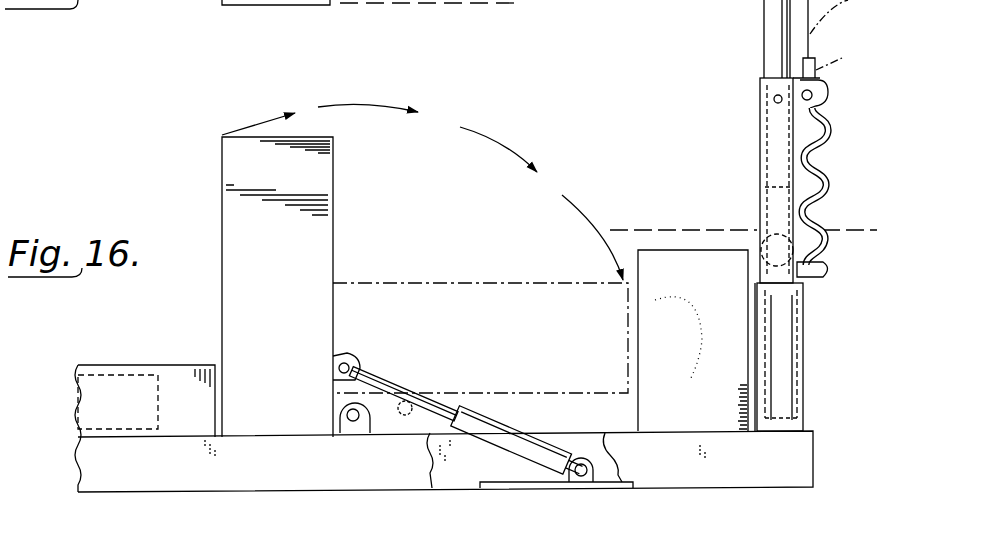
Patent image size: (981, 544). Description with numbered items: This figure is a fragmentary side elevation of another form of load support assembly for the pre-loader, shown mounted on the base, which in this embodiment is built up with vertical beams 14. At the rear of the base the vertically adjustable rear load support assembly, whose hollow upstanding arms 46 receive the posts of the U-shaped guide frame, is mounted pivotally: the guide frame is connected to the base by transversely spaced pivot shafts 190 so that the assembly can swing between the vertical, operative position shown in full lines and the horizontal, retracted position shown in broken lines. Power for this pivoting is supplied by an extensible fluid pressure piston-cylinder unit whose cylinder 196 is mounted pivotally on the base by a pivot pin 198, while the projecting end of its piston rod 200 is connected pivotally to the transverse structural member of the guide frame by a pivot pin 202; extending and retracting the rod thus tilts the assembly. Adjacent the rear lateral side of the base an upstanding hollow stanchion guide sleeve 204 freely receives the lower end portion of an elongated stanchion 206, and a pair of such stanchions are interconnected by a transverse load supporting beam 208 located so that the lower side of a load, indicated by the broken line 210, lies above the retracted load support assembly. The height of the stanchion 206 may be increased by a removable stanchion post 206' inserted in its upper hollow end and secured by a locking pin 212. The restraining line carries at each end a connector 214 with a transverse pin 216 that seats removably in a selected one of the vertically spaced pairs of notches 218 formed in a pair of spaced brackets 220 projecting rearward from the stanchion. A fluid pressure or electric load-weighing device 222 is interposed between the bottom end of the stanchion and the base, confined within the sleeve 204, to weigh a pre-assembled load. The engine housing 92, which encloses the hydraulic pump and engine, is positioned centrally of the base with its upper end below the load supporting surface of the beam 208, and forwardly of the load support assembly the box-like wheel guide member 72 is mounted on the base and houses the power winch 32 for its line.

The vertical beams 14 is at (105, 467).
The power winch 32 is at (108, 374).
The upstanding arms 46 is at (413, 282).
The box-like wheel guide member 72 is at (190, 382).
The housing 92 is at (648, 404).
The pivot shafts 190 is at (357, 422).
The cylinder 196 is at (527, 418).
The pivot pin 198 is at (585, 478).
The piston rod 200 is at (378, 380).
The pivot pin 202 is at (348, 363).
The stanchion guide sleeve 204 is at (805, 350).
The stanchion 206 is at (746, 180).
The removable stanchion post 206' is at (745, 39).
The transverse load supporting beam 208 is at (772, 235).
The broken line indicating lower side of load 210 is at (667, 229).
The locking pin 212 is at (773, 99).
The connector 214 is at (832, 39).
The transverse pin 216 is at (818, 102).
The notches 218 is at (826, 252).
The brackets 220 is at (812, 272).
The load-weighing device 222 is at (804, 427).